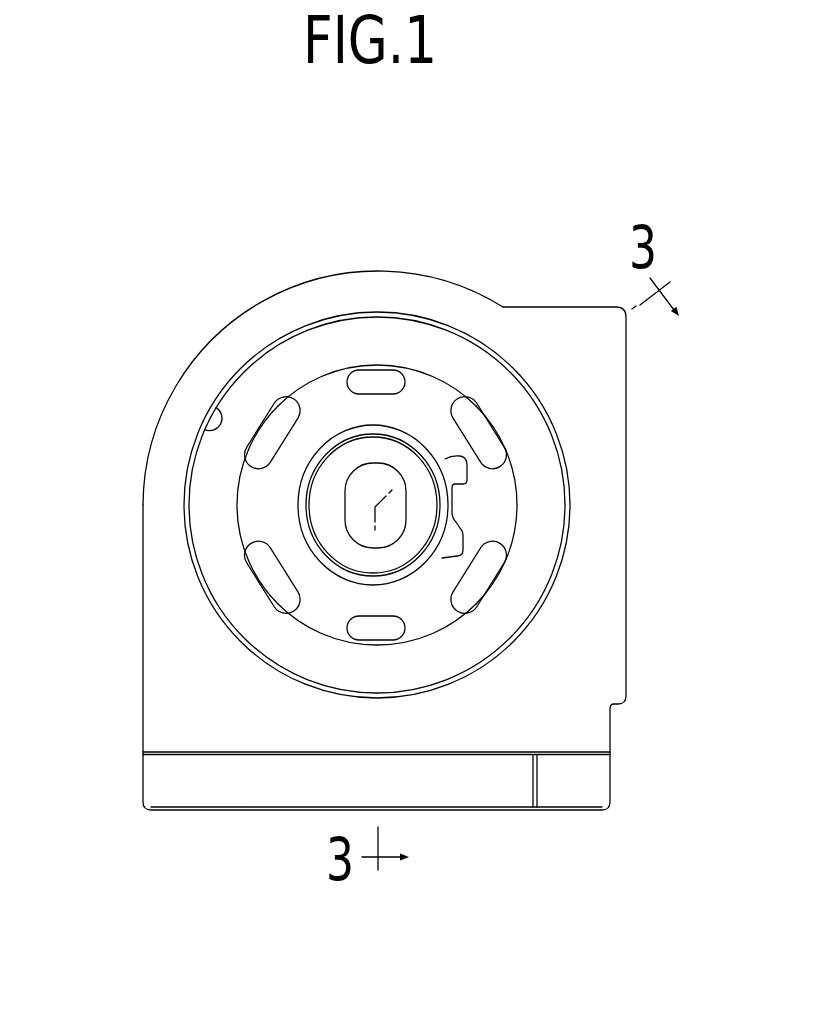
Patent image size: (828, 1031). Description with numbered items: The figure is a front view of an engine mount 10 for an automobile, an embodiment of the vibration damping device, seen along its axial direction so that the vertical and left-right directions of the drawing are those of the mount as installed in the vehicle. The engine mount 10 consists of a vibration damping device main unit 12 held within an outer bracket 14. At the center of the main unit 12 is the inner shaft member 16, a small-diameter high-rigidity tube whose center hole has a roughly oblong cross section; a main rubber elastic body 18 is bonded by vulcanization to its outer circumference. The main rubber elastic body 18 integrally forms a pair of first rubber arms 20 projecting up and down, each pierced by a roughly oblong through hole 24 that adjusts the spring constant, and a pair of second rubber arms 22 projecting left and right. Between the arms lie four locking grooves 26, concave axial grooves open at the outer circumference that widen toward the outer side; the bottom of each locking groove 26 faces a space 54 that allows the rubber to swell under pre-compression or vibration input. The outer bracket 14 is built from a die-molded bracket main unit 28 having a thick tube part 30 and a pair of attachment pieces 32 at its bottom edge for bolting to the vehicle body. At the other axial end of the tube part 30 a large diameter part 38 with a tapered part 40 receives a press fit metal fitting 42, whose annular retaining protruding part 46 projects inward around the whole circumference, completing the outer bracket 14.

The engine mount 10 is at (146, 280).
The vibration damping device main unit 12 is at (456, 379).
The outer bracket 14 is at (126, 732).
The inner shaft member 16 is at (418, 478).
The main rubber elastic body 18 is at (297, 558).
The first rubber arms 20 is at (327, 397).
The second rubber arms 22 is at (257, 508).
The through hole 24 is at (375, 381).
The locking grooves 26 is at (258, 545).
The bracket main unit 28 is at (548, 820).
The tube part 30 is at (218, 368).
The attachment pieces 32 is at (578, 777).
The large diameter part 38 is at (212, 432).
The tapered part 40 is at (275, 663).
The press fit metal fitting 42 is at (494, 661).
The retaining protruding part 46 is at (500, 587).
The space 54 is at (282, 422).